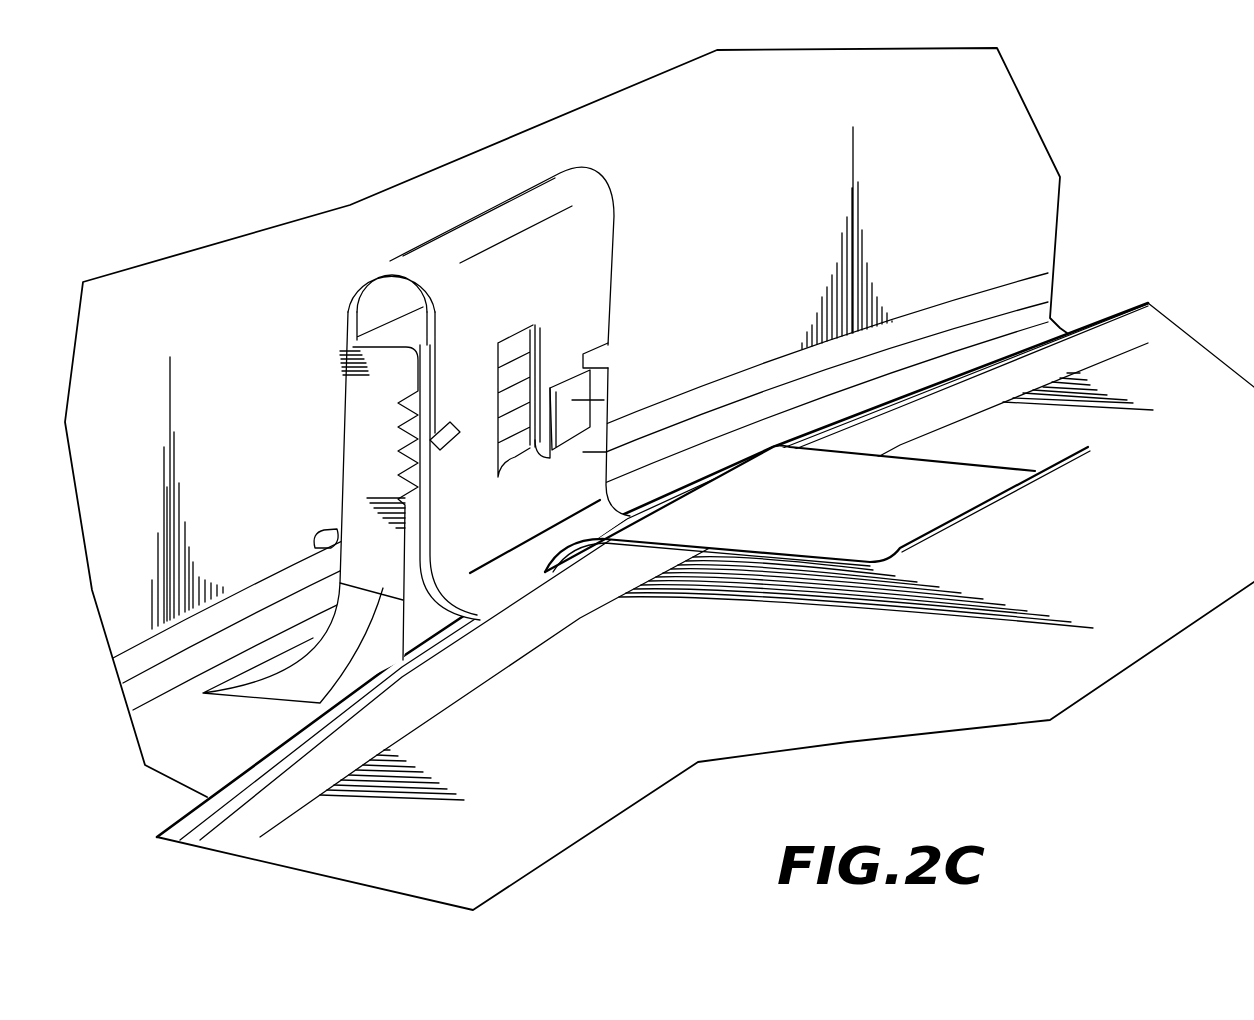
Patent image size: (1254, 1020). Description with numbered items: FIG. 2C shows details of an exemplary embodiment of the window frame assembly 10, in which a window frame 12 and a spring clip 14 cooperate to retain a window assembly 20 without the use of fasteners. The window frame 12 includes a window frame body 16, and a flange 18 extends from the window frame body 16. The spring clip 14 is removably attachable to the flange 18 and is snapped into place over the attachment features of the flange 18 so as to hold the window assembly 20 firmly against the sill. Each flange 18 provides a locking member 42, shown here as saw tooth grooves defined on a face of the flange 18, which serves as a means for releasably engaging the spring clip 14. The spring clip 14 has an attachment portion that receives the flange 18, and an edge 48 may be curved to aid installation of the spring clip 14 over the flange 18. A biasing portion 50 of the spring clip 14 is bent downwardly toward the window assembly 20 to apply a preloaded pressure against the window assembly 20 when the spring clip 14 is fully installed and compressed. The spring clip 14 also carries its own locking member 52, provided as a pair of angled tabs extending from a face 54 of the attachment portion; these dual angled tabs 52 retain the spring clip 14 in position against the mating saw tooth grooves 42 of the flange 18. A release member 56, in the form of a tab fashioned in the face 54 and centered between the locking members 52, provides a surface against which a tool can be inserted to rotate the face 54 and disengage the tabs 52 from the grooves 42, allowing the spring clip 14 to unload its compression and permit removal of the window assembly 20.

The window frame assembly 10 is at (788, 121).
The window frame 12 is at (900, 246).
The spring clip 14 is at (627, 166).
The window frame body 16 is at (706, 364).
The flange 18 is at (296, 441).
The window assembly 20 is at (766, 650).
The locking member 42 is at (391, 440).
The edge 48 is at (322, 531).
The biasing portion 50 is at (685, 471).
The locking member 52 is at (610, 353).
The face 54 is at (601, 451).
The release member 56 is at (586, 397).